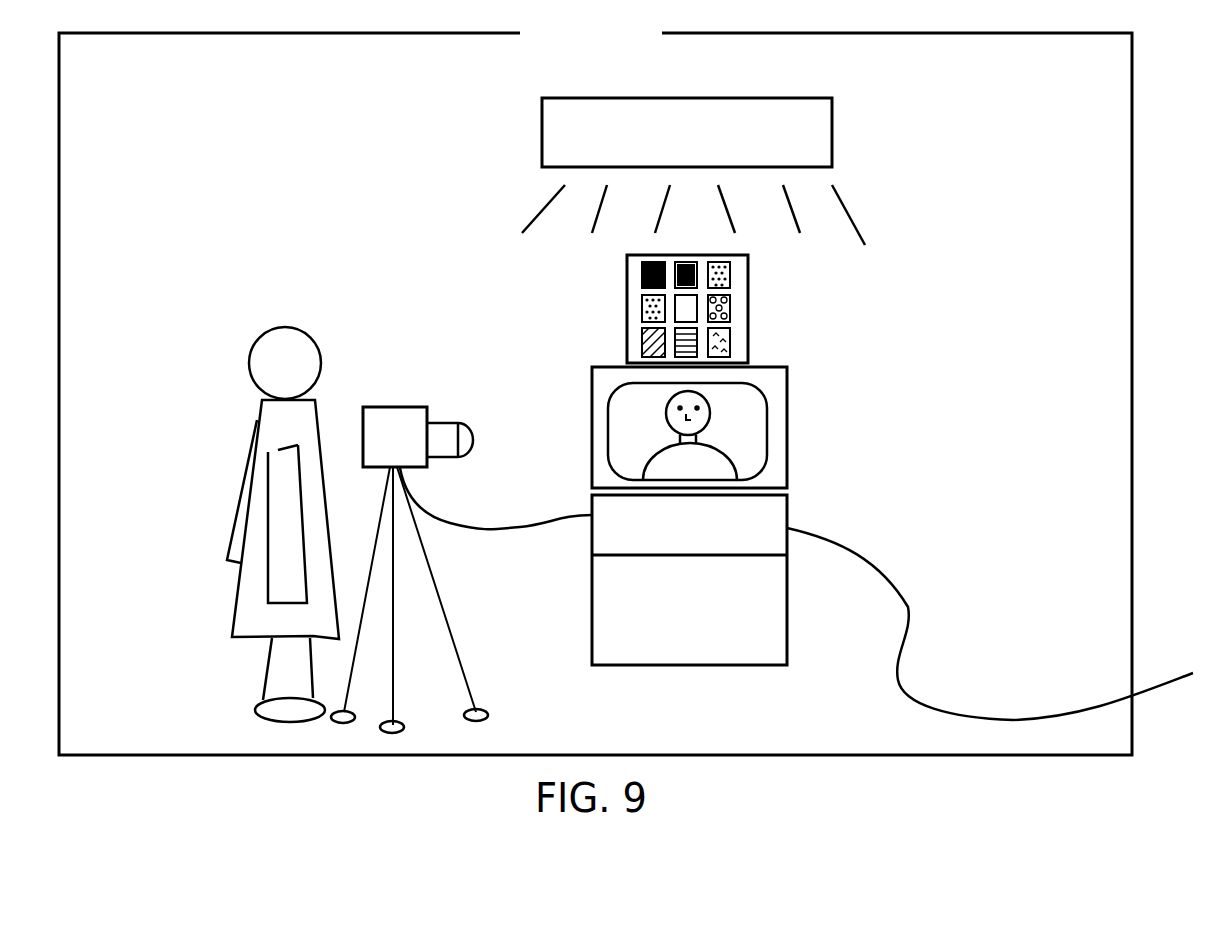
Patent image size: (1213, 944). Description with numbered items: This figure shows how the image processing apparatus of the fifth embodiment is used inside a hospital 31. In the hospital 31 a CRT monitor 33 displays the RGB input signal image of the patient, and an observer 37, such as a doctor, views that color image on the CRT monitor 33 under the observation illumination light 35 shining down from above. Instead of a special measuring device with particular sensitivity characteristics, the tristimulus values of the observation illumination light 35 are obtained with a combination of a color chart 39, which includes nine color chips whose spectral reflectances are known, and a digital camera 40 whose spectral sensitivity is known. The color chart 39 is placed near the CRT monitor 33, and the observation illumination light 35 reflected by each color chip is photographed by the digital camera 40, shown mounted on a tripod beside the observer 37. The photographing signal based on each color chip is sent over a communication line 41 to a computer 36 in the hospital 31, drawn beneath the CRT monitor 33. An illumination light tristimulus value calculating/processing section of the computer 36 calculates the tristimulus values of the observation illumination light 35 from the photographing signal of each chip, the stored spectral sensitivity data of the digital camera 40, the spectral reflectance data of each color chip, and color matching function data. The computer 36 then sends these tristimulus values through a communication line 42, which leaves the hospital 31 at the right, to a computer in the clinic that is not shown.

The hospital 31 is at (1134, 133).
The CRT monitor 33 is at (788, 421).
The observation illumination light 35 is at (542, 137).
The computer 36 is at (788, 514).
The observer 37 is at (258, 424).
The color chart 39 is at (750, 311).
The digital camera 40 is at (397, 405).
The communication line 41 is at (510, 531).
The communication line 42 is at (912, 610).